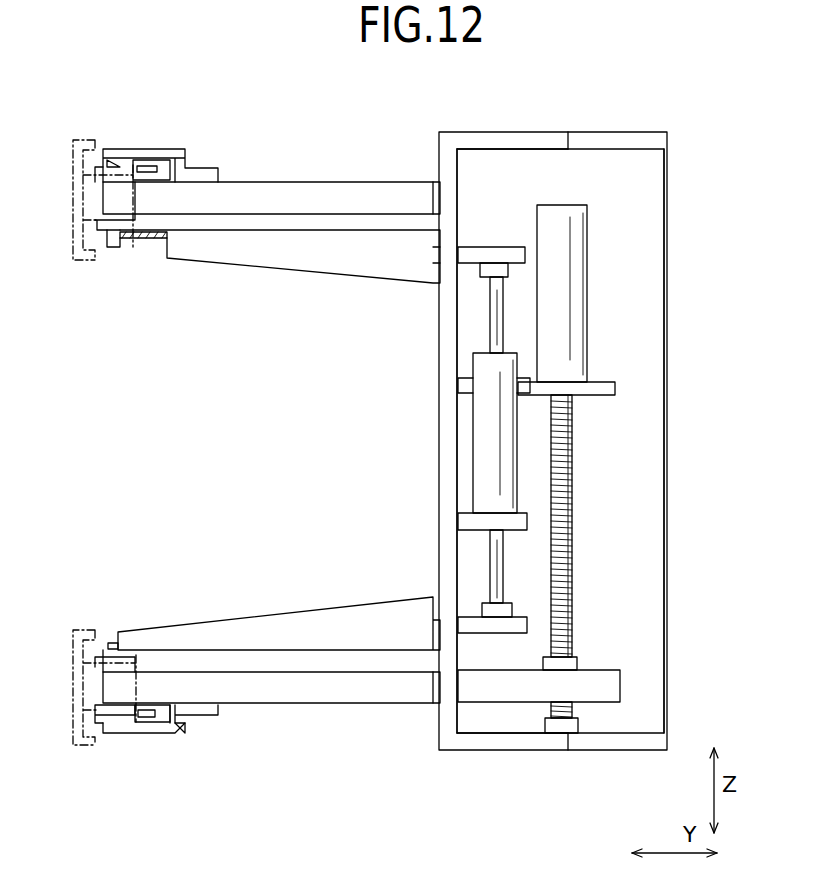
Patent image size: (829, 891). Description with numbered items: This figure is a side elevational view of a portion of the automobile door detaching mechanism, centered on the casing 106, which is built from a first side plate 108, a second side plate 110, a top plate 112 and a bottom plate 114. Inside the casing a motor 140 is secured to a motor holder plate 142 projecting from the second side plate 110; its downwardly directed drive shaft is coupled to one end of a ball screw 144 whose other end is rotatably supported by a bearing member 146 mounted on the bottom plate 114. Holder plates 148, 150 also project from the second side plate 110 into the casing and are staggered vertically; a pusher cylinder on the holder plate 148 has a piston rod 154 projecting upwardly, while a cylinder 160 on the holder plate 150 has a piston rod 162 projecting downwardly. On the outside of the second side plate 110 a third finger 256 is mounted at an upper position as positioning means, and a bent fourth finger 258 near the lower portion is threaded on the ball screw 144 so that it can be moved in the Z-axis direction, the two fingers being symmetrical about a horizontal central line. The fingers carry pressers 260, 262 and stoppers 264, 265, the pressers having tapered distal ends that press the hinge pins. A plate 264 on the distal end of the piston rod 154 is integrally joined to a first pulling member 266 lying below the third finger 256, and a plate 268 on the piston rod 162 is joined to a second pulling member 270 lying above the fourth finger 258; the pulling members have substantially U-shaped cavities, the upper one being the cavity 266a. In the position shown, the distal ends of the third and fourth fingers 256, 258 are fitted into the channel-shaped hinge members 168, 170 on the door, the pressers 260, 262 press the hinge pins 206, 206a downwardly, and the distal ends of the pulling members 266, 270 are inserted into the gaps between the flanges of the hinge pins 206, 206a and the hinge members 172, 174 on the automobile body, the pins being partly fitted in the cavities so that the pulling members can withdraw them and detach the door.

The casing 106 is at (551, 124).
The first side plate 108 is at (633, 283).
The second side plate 110 is at (448, 428).
The top plate 112 is at (496, 138).
The bottom plate 114 is at (515, 746).
The motor 140 is at (563, 257).
The motor holder plate 142 is at (616, 389).
The ball screw 144 is at (557, 526).
The bearing member 146 is at (573, 728).
The holder plate 148 is at (464, 381).
The holder plate 150 is at (474, 521).
The piston rod 154 is at (494, 320).
The cylinder 160 is at (483, 474).
The piston rod 162 is at (498, 578).
The channel-shaped hinge member 168 is at (100, 170).
The channel-shaped hinge member 170 is at (98, 745).
The hinge member 172 is at (87, 140).
The hinge member 174 is at (79, 745).
The hinge pin 206 is at (117, 248).
The hinge pin 206a is at (113, 643).
The third finger 256 is at (285, 196).
The fourth finger 258 is at (345, 690).
The presser 260 is at (142, 152).
The presser 262 is at (160, 733).
The plate 264 is at (490, 250).
The stopper 265 is at (185, 732).
The first pulling member 266 is at (315, 264).
The U-shaped cavity 266a is at (136, 240).
The plate 268 is at (516, 625).
The second pulling member 270 is at (259, 631).